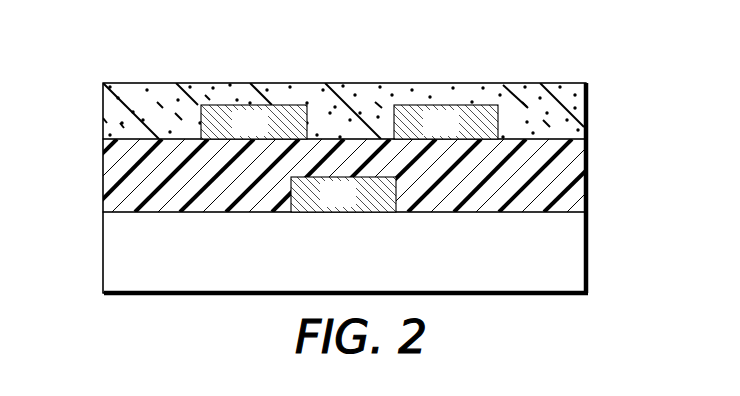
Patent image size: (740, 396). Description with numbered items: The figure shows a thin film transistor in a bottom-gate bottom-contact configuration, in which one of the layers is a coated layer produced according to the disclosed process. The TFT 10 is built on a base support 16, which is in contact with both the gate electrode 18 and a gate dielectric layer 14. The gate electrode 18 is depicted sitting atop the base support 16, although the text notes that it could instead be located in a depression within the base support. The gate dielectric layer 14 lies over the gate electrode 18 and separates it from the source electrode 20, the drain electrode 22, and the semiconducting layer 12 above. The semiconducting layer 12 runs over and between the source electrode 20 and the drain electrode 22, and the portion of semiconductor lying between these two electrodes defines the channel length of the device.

The TFT 10 is at (127, 48).
The semiconducting layer 12 is at (585, 112).
The gate dielectric layer 14 is at (95, 139).
The base support 16 is at (578, 252).
The gate electrode 18 is at (347, 202).
The source electrode 20 is at (257, 132).
The drain electrode 22 is at (449, 132).